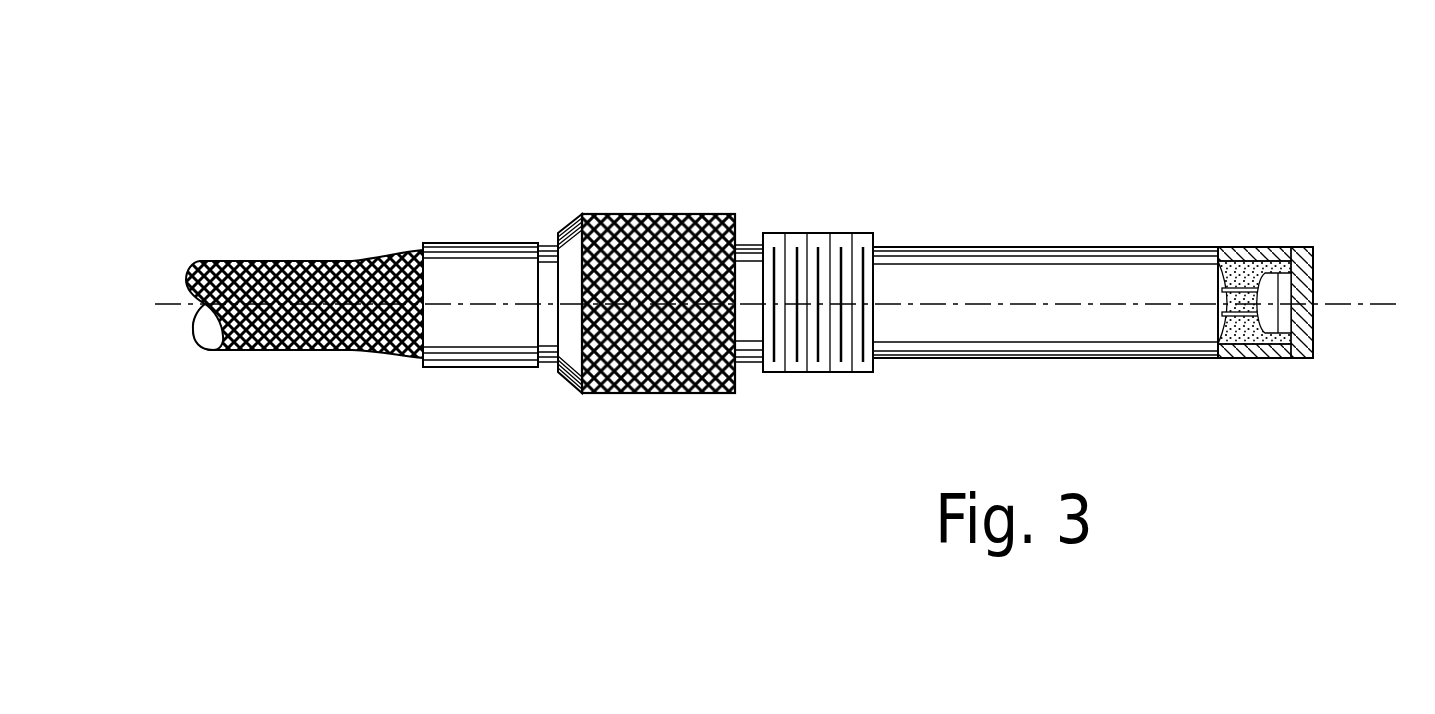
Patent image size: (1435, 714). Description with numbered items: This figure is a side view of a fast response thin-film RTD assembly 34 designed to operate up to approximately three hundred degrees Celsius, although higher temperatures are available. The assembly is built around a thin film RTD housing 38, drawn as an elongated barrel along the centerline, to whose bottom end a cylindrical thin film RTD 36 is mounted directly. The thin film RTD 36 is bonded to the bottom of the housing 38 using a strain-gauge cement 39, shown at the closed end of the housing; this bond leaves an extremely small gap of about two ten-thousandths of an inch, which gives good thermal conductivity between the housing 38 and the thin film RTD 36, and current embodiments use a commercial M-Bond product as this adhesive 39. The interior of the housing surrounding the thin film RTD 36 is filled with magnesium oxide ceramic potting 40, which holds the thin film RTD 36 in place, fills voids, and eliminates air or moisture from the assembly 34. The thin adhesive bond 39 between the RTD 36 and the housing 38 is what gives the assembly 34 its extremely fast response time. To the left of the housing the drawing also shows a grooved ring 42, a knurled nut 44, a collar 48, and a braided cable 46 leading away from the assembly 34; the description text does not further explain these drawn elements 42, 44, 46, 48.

The thin-film RTD assembly 34 is at (920, 279).
The thin film RTD 36 is at (1268, 318).
The thin film RTD housing 38 is at (1132, 278).
The strain-gauge cement 39 is at (1311, 284).
The magnesium oxide ceramic potting 40 is at (1245, 332).
The grooved ring 42 is at (862, 213).
The knurled nut 44 is at (680, 409).
The cable 46 is at (333, 348).
The collar 48 is at (488, 242).